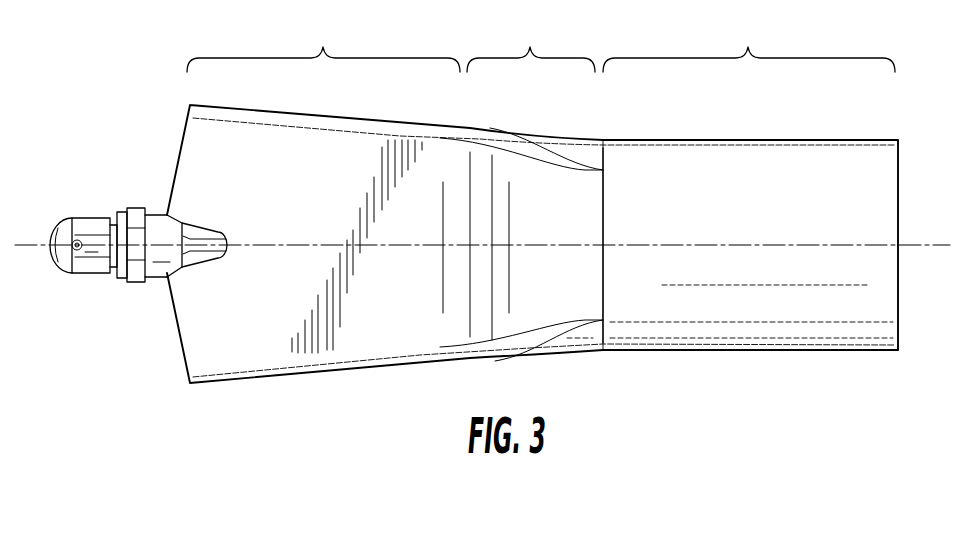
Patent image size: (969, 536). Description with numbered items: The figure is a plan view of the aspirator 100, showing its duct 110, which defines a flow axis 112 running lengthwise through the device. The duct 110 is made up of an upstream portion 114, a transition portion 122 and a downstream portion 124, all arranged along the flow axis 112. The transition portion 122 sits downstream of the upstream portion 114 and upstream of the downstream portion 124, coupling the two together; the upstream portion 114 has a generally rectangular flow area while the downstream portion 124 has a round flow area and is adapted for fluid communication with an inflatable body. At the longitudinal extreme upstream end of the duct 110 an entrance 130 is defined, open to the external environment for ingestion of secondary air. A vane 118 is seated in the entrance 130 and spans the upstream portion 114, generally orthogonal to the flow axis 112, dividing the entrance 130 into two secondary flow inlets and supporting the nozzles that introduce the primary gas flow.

The aspirator 100 is at (213, 414).
The duct 110 is at (367, 347).
The flow axis 112 is at (755, 247).
The upstream portion 114 is at (323, 40).
The vane 118 is at (153, 227).
The transition portion 122 is at (521, 185).
The downstream portion 124 is at (749, 179).
The entrance 130 is at (153, 368).